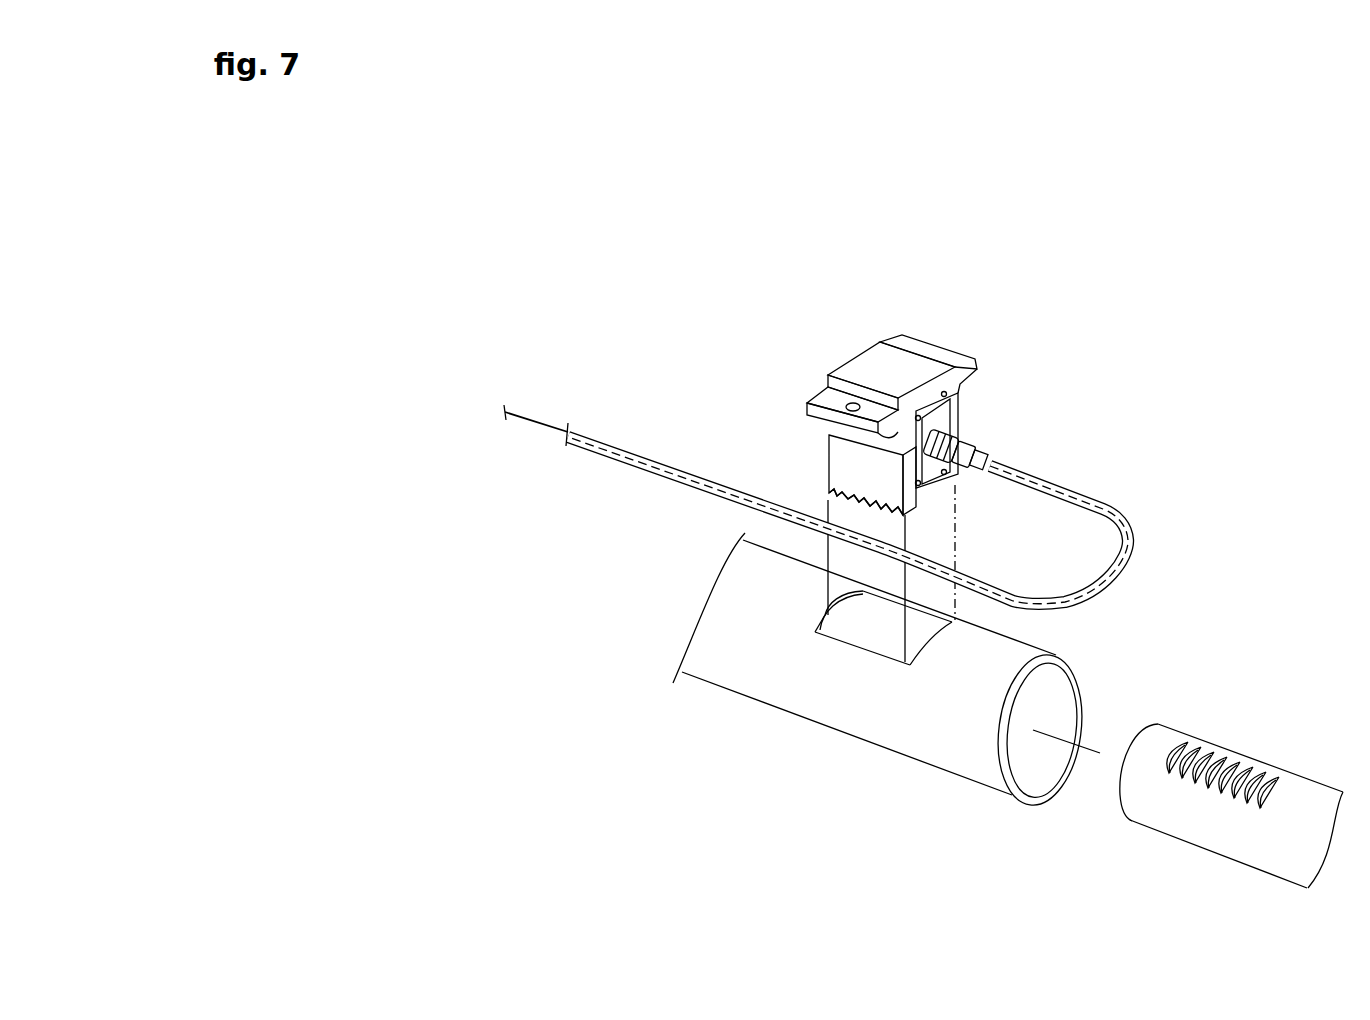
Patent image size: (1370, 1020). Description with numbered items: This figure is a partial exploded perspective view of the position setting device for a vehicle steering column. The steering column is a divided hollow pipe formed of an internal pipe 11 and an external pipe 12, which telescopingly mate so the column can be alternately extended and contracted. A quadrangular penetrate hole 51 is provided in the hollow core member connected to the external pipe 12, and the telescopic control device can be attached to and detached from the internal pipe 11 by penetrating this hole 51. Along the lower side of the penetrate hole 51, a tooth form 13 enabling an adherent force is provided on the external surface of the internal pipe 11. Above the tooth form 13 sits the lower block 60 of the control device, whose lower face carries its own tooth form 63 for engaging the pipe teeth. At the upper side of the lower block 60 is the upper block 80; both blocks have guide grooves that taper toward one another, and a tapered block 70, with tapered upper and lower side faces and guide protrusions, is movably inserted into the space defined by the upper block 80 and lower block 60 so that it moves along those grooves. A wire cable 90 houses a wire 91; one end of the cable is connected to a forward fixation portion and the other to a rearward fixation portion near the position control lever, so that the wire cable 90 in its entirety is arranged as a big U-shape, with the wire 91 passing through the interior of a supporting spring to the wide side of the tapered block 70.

The internal pipe 11 is at (1197, 830).
The external pipe 12 is at (775, 692).
The tooth form 13 is at (1217, 750).
The penetrate hole 51 is at (885, 640).
The lower block 60 is at (828, 455).
The teeth 63 is at (822, 505).
The tapered block 70 is at (928, 417).
The upper block 80 is at (877, 360).
The wire cable 90 is at (1102, 487).
The wire 91 is at (587, 445).